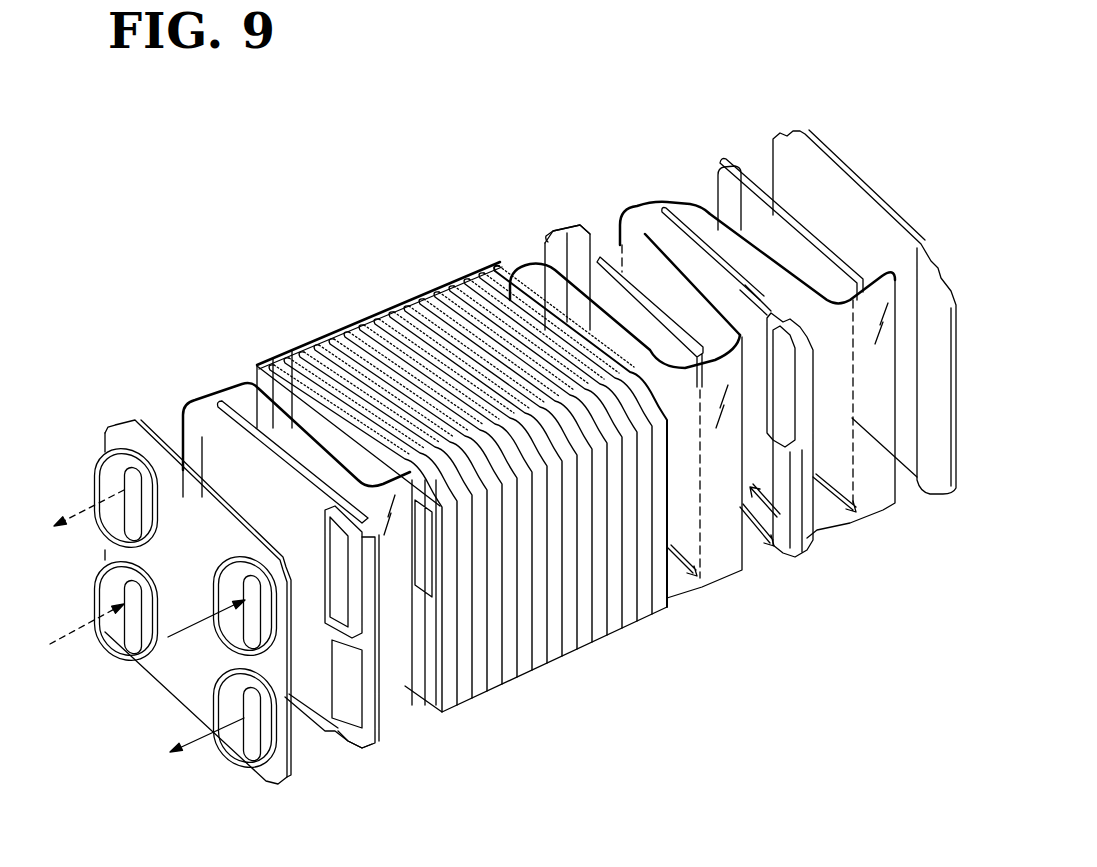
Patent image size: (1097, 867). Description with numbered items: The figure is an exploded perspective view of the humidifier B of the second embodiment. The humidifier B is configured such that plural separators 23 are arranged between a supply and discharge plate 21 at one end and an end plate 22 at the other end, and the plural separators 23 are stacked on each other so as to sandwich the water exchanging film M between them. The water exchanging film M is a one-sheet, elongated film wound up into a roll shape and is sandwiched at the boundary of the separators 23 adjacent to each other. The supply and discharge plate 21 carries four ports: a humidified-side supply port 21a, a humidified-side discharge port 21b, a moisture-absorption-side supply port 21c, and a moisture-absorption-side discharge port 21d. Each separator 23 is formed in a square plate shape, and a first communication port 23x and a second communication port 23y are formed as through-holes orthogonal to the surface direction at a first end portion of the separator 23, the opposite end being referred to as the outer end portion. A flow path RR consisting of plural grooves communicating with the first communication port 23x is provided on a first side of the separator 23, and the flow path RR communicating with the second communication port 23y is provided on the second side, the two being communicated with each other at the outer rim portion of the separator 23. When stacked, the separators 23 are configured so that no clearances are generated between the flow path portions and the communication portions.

The humidifier B is at (366, 216).
The supply and discharge plate 21 is at (163, 680).
The humidified-side supply port 21a is at (222, 590).
The humidified-side discharge port 21b is at (225, 755).
The moisture-absorption-side supply port 21c is at (115, 624).
The moisture-absorption-side discharge port 21d is at (104, 476).
The end plate 22 is at (893, 217).
The separator 23 is at (593, 248).
The first communication port 23x is at (542, 262).
The second communication port 23y is at (328, 572).
The flow path RR is at (637, 263).
The water exchanging film M is at (735, 572).